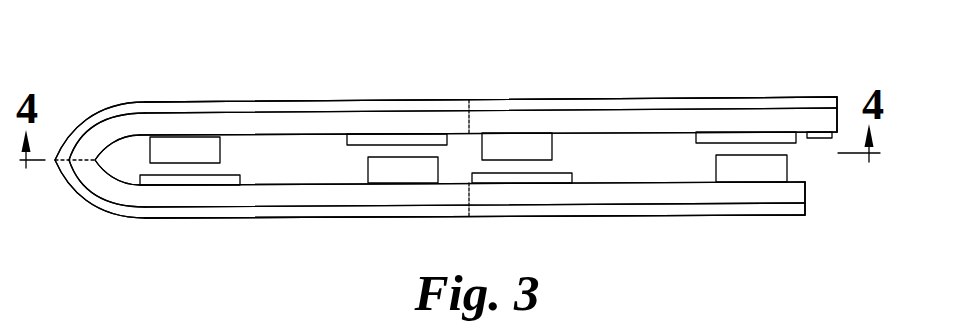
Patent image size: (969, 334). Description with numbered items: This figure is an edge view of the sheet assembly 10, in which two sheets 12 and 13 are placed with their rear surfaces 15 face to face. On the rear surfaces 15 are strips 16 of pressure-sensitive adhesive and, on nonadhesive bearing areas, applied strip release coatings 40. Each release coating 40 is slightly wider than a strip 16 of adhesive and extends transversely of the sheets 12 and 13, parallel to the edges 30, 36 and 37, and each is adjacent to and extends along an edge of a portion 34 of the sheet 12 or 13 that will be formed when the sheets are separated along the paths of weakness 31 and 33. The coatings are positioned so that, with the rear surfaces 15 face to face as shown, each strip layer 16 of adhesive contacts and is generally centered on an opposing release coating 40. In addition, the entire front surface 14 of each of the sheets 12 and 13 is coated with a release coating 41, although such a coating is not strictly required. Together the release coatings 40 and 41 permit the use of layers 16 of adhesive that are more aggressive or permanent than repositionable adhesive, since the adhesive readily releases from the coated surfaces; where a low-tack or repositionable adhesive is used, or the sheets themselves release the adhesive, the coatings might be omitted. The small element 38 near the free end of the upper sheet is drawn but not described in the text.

The sheet assembly 10 is at (643, 230).
The sheet 12 is at (279, 220).
The sheet 13 is at (643, 96).
The front surface 14 is at (342, 110).
The rear surface 15 is at (352, 181).
The strip of adhesive 16 is at (197, 148).
The edge 30 is at (92, 152).
The path of weakness 31 is at (80, 158).
The path of weakness 33 is at (468, 122).
The portion of the sheet 34 is at (461, 90).
The edge 36 is at (840, 110).
The edge 37 is at (806, 188).
The contact tab 38 is at (819, 140).
The release coating 40 is at (176, 180).
The release coating 41 is at (183, 102).